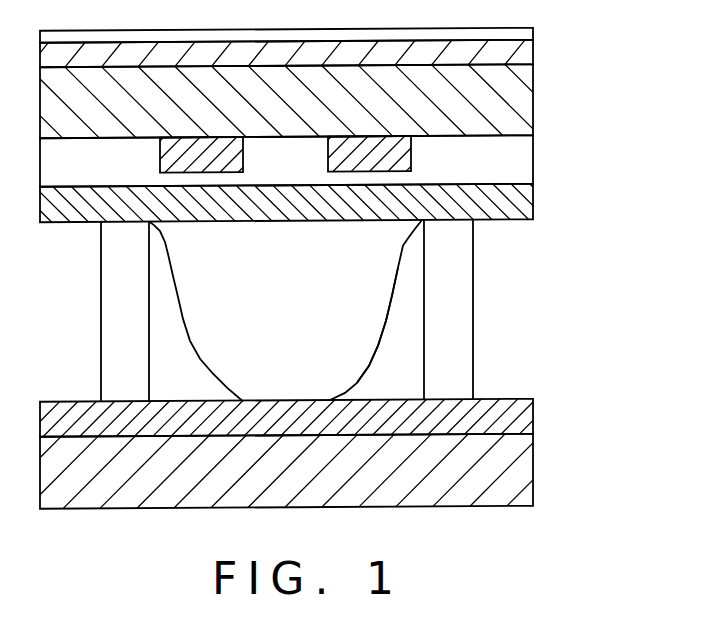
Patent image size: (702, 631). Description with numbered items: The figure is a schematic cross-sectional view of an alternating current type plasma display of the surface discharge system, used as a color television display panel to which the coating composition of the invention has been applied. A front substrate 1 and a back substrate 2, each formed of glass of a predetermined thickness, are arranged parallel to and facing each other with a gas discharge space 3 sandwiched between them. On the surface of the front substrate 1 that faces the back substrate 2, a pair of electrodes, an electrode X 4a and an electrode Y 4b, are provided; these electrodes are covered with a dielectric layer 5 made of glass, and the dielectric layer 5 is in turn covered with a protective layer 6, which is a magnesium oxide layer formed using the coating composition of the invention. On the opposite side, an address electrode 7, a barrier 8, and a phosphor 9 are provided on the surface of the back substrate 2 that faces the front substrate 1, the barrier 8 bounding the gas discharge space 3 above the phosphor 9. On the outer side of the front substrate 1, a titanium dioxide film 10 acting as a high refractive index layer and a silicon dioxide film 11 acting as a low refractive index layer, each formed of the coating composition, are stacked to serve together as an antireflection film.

The front substrate 1 is at (523, 110).
The back substrate 2 is at (522, 476).
The gas discharge space 3 is at (385, 276).
The electrode X 4a is at (167, 156).
The electrode Y 4b is at (411, 164).
The dielectric layer 5 is at (520, 168).
The protective layer 6 is at (527, 210).
The address electrode 7 is at (523, 425).
The barrier 8 is at (458, 316).
The phosphor 9 is at (402, 372).
The titanium dioxide film 10 is at (518, 60).
The silicon dioxide film 11 is at (533, 34).